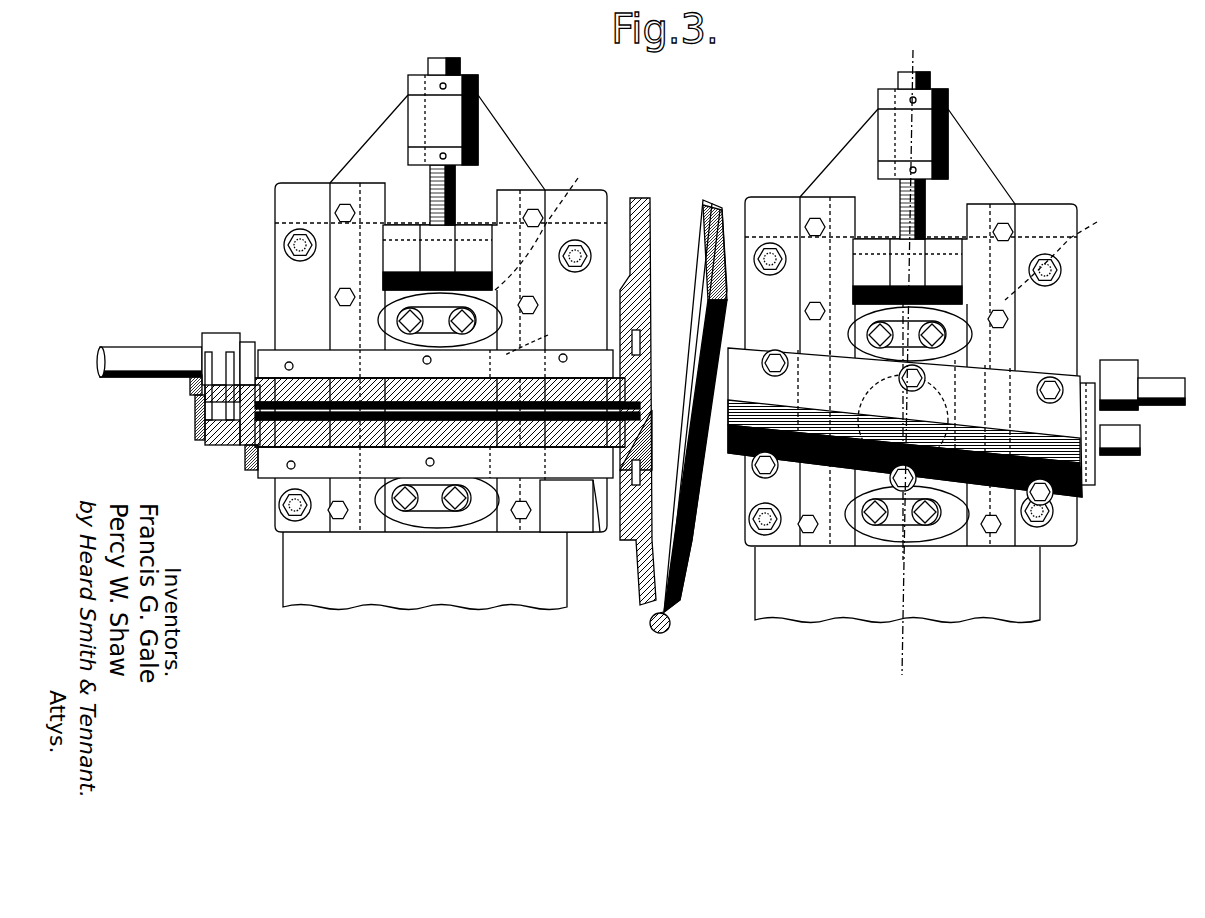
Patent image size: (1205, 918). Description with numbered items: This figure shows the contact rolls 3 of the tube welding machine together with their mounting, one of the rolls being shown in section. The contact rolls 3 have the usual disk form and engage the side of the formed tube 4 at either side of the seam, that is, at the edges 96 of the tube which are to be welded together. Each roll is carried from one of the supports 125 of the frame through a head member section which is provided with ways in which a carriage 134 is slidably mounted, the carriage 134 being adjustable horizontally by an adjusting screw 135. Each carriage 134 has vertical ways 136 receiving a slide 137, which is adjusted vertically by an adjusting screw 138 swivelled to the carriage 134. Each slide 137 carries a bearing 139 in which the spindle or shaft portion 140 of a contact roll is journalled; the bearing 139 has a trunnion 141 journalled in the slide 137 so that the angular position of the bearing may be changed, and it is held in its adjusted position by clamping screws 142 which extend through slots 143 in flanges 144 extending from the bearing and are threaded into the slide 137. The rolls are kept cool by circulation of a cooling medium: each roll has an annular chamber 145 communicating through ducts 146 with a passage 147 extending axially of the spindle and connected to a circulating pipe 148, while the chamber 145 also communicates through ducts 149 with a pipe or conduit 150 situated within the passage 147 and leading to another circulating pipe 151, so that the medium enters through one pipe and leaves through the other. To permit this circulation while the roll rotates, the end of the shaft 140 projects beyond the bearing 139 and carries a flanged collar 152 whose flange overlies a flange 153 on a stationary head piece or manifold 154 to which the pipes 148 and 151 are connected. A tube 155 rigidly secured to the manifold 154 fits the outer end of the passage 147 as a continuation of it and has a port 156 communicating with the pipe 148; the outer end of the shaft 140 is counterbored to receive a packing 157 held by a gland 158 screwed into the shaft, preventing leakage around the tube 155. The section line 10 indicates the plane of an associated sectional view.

The contact roll 3 is at (703, 205).
The formed tube 4 is at (670, 625).
The bearings 10 is at (904, 360).
The edges of the tube 96 is at (651, 629).
The supports of the frame 125 is at (497, 598).
The carriage 134 is at (487, 135).
The adjusting screw 135 is at (143, 348).
The vertical ways 136 is at (812, 225).
The slide 137 is at (385, 288).
The adjusting screw 138 is at (462, 66).
The bearing 139 is at (283, 500).
The spindle or shaft portion 140 is at (300, 362).
The trunnion 141 is at (660, 359).
The clamping screws 142 is at (472, 312).
The slots 143 is at (440, 334).
The flanges 144 is at (395, 518).
The annular chamber 145 is at (641, 335).
The ducts 146 is at (648, 410).
The passage 147 is at (593, 482).
The circulating pipe 148 is at (229, 352).
The ducts 149 is at (582, 358).
The pipe or conduit 150 is at (451, 462).
The circulating pipe 151 is at (215, 334).
The flanged collar 152 is at (250, 462).
The flange 153 is at (245, 438).
The stationary head piece or manifold 154 is at (195, 415).
The tube 155 is at (205, 432).
The port 156 is at (190, 386).
The packing 157 is at (283, 350).
The gland 158 is at (252, 342).